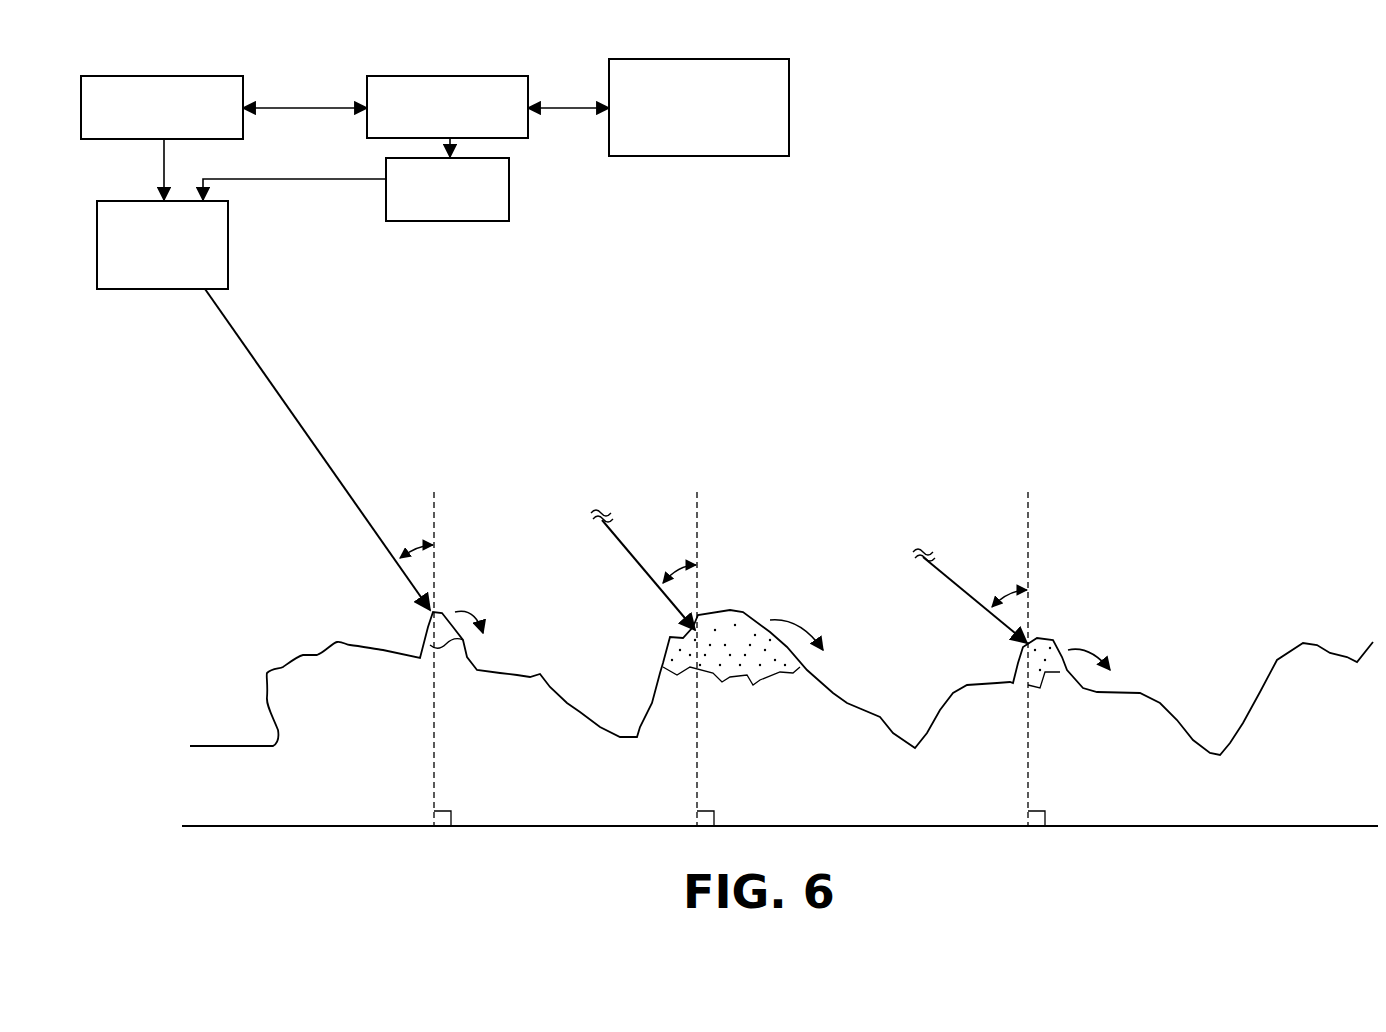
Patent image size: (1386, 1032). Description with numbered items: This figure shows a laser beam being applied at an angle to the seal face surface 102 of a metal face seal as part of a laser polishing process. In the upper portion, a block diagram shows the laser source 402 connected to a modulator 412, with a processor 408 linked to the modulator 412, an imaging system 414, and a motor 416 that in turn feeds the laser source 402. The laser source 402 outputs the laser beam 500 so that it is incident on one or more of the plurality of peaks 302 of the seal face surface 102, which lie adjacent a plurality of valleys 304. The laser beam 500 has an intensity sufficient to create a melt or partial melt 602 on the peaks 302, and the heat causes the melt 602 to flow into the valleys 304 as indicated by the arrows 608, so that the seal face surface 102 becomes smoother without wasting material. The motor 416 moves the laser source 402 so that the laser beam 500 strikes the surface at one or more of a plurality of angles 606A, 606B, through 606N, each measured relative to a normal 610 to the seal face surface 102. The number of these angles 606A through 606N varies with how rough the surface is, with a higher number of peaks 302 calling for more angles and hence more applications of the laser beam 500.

The seal face surface 102 is at (227, 758).
The peaks 302 is at (420, 635).
The valleys 304 is at (553, 687).
The laser source 402 is at (228, 232).
The processor 408 is at (530, 87).
The modulator 412 is at (243, 87).
The imaging system 414 is at (789, 125).
The motor 416 is at (509, 193).
The laser beam 500 is at (303, 418).
The melt or partial melt 602 is at (442, 612).
The angle 606A is at (405, 545).
The angle 606B is at (680, 568).
The angle 606N is at (1007, 585).
The arrows 608 is at (470, 612).
The normal 610 is at (435, 516).